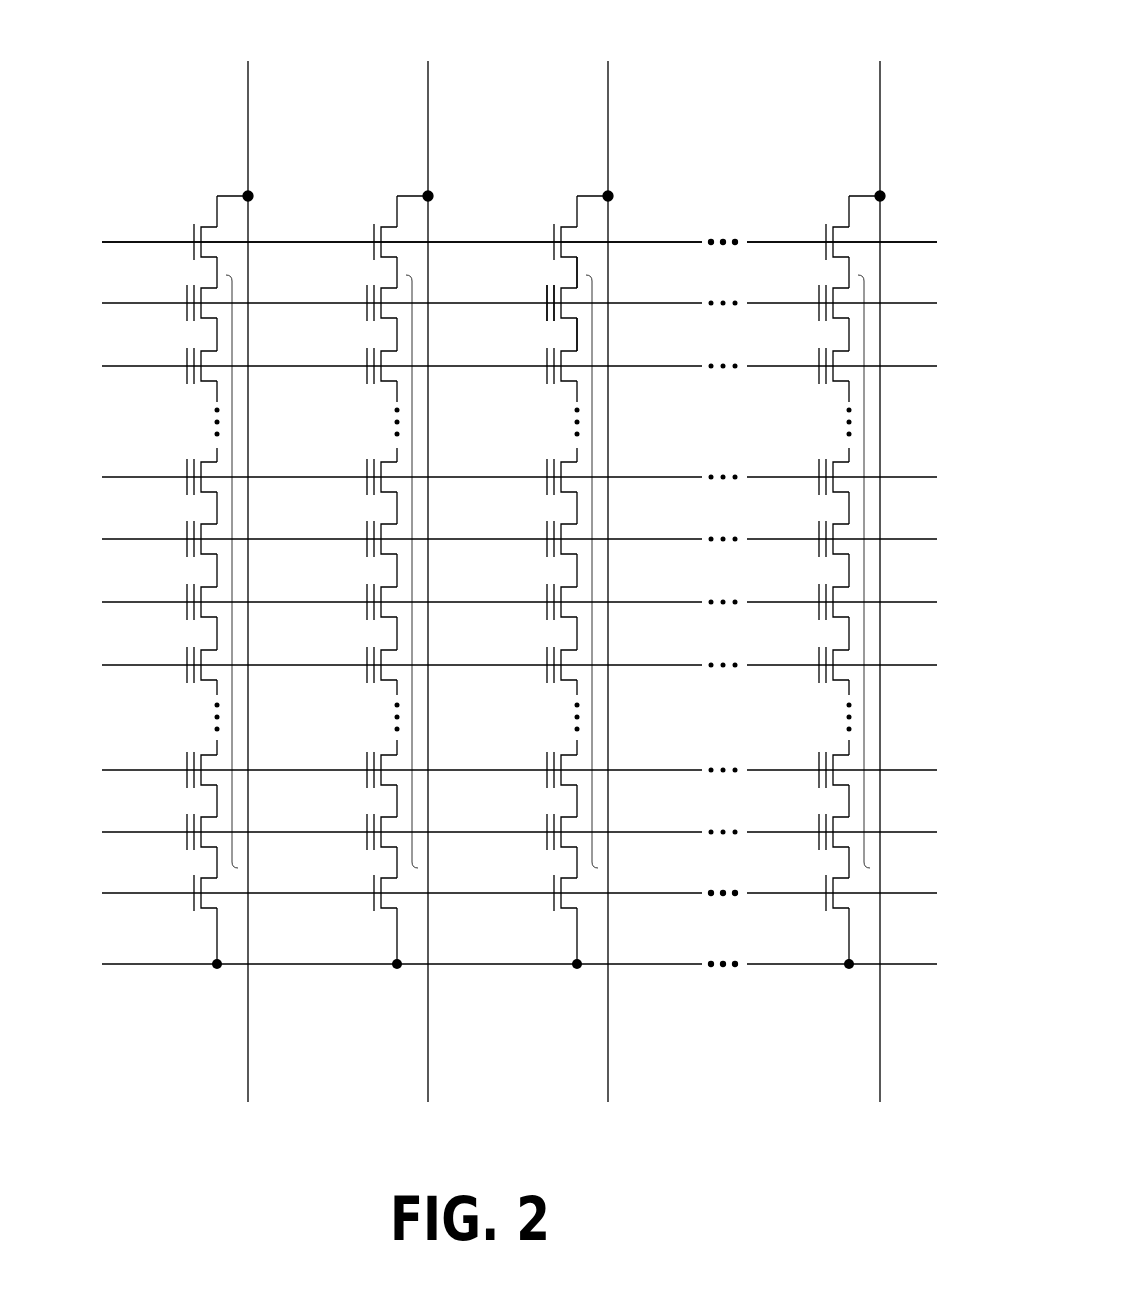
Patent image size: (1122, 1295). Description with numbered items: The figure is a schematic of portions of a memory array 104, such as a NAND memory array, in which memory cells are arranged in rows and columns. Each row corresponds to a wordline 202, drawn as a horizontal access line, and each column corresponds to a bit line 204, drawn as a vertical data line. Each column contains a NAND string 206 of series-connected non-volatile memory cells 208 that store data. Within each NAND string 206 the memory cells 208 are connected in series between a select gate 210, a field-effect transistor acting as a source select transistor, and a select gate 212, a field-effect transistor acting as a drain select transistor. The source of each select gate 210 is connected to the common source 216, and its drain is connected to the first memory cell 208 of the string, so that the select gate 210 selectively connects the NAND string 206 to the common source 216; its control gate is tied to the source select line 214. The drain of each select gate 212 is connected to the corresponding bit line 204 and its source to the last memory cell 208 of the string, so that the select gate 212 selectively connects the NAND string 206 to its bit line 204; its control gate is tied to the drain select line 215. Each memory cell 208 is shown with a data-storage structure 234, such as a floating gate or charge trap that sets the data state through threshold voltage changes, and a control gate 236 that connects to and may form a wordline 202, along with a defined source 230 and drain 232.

The memory array 104 is at (779, 58).
The bit line 204 is at (250, 112).
The wordline 202 is at (150, 302).
The NAND string 206 is at (234, 572).
The memory cell 208 is at (200, 320).
The select gate 210 is at (206, 911).
The select gate 212 is at (210, 226).
The select line 214 is at (785, 892).
The select line 215 is at (782, 241).
The common source 216 is at (175, 966).
The source/drain 230 is at (580, 336).
The source/drain 232 is at (580, 274).
The data-storage structure 234 is at (547, 287).
The control gate 236 is at (547, 318).